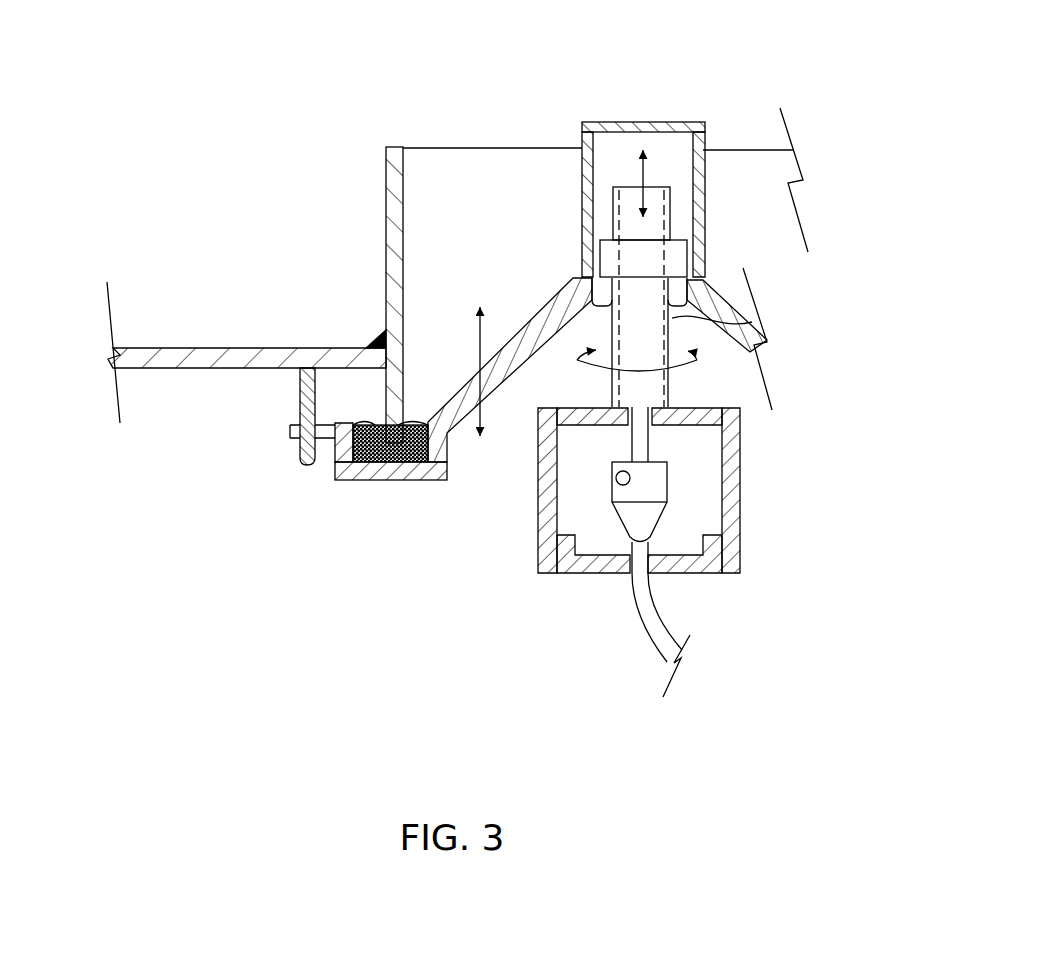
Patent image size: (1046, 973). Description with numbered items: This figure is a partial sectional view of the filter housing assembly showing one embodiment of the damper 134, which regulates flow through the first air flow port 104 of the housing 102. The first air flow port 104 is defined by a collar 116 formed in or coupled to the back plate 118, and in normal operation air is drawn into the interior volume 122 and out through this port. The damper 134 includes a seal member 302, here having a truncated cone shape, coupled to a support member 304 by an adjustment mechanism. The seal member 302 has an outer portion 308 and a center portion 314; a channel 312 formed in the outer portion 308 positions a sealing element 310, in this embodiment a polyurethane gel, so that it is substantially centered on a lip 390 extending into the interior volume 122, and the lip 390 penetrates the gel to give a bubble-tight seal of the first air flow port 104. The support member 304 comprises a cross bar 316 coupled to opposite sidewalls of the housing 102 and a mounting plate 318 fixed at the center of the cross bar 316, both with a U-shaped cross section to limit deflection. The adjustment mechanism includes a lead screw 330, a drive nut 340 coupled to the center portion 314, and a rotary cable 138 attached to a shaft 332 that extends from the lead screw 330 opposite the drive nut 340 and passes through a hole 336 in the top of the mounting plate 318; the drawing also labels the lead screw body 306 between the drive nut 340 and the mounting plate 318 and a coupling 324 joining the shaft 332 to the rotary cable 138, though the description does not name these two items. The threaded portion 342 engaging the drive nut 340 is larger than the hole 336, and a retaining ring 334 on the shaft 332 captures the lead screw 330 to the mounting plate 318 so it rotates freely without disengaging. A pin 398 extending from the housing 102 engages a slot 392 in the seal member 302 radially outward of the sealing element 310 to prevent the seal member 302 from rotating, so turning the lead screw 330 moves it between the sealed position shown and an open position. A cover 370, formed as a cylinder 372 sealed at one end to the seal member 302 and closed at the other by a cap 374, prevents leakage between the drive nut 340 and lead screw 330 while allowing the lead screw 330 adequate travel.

The housing 102 is at (253, 335).
The first air flow port 104 is at (436, 338).
The collar 116 is at (392, 203).
The back plate 118 is at (163, 352).
The interior volume 122 is at (497, 579).
The damper 134 is at (830, 328).
The rotary cable 138 is at (651, 649).
The seal member 302 is at (531, 311).
The support member 304 is at (570, 580).
The shaft 306 is at (682, 390).
The outer portion 308 is at (437, 452).
The sealing element 310 is at (402, 481).
The channel 312 is at (433, 482).
The center portion 314 is at (598, 292).
The cross bar 316 is at (598, 574).
The mounting plate 318 is at (732, 505).
The coupling 324 is at (628, 560).
The lead screw 330 is at (690, 325).
The shaft 332 is at (597, 410).
The retaining ring 334 is at (663, 440).
The hole 336 is at (680, 423).
The drive nut 340 is at (670, 257).
The threaded portion 342 is at (672, 338).
The cover 370 is at (598, 116).
The cylinder 372 is at (582, 138).
The cap 374 is at (676, 123).
The lip 390 is at (378, 395).
The slot 392 is at (289, 422).
The pin 398 is at (305, 465).